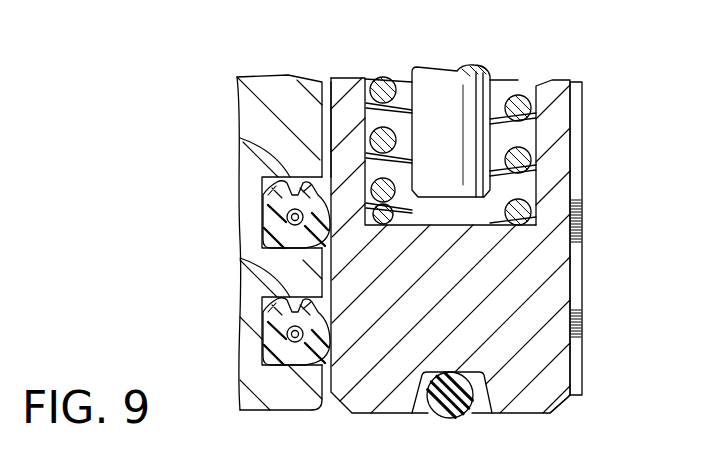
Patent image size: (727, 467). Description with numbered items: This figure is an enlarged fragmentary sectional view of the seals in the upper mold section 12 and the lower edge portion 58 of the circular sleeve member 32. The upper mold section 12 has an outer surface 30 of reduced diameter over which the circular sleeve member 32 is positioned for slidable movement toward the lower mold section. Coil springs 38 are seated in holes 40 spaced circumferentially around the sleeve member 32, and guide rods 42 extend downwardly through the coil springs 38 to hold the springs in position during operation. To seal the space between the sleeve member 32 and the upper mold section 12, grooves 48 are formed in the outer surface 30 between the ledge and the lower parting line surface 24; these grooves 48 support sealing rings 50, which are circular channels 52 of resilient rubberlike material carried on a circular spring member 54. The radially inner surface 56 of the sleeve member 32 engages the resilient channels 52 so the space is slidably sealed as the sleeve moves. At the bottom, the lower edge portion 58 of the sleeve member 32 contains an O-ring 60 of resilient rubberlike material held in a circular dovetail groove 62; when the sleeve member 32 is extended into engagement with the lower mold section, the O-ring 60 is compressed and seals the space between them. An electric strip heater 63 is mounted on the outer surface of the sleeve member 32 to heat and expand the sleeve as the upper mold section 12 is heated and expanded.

The upper mold section 12 is at (262, 80).
The lower parting line surface 24 is at (263, 412).
The outer surface 30 is at (326, 92).
The circular sleeve member 32 is at (548, 170).
The coil springs 38 is at (520, 120).
The holes 40 is at (536, 83).
The guide rods 42 is at (472, 65).
The grooves 48 is at (240, 137).
The sealing rings 50 is at (277, 193).
The circular channels 52 is at (263, 223).
The circular spring member 54 is at (287, 223).
The radially inner surface 56 is at (323, 113).
The lower edge portion 58 is at (517, 402).
The O-ring 60 is at (455, 410).
The circular dovetail groove 62 is at (420, 383).
The electric strip heater 63 is at (584, 124).